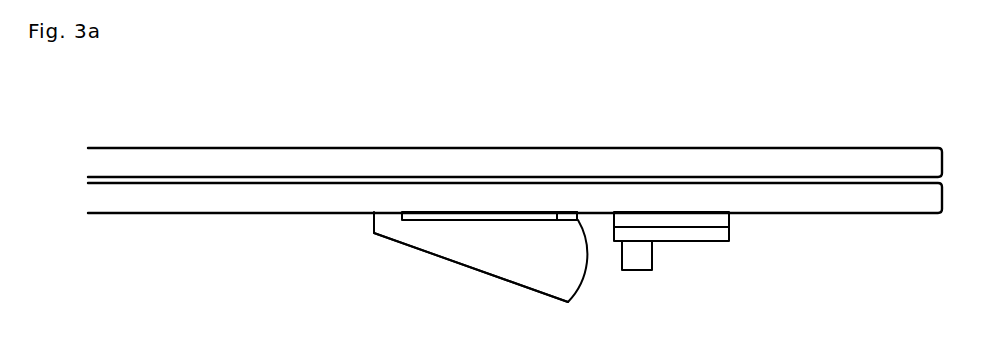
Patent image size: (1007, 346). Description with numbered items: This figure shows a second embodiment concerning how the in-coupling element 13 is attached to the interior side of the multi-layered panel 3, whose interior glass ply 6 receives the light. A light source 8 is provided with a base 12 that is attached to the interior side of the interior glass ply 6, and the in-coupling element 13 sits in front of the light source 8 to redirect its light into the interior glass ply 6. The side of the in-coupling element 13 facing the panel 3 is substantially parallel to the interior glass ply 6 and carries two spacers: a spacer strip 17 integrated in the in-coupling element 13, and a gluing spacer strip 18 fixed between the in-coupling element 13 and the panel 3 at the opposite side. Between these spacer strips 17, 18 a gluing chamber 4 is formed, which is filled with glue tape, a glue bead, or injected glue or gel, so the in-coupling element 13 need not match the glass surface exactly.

The multi-layered panel 3 is at (828, 124).
The interior glass ply 6 is at (173, 198).
The spacer strip 17 is at (392, 220).
The in-coupling element 13 is at (440, 235).
The gluing chamber 4 is at (487, 217).
The gluing spacer strip 18 is at (570, 218).
The base 12 is at (705, 232).
The light source 8 is at (638, 255).